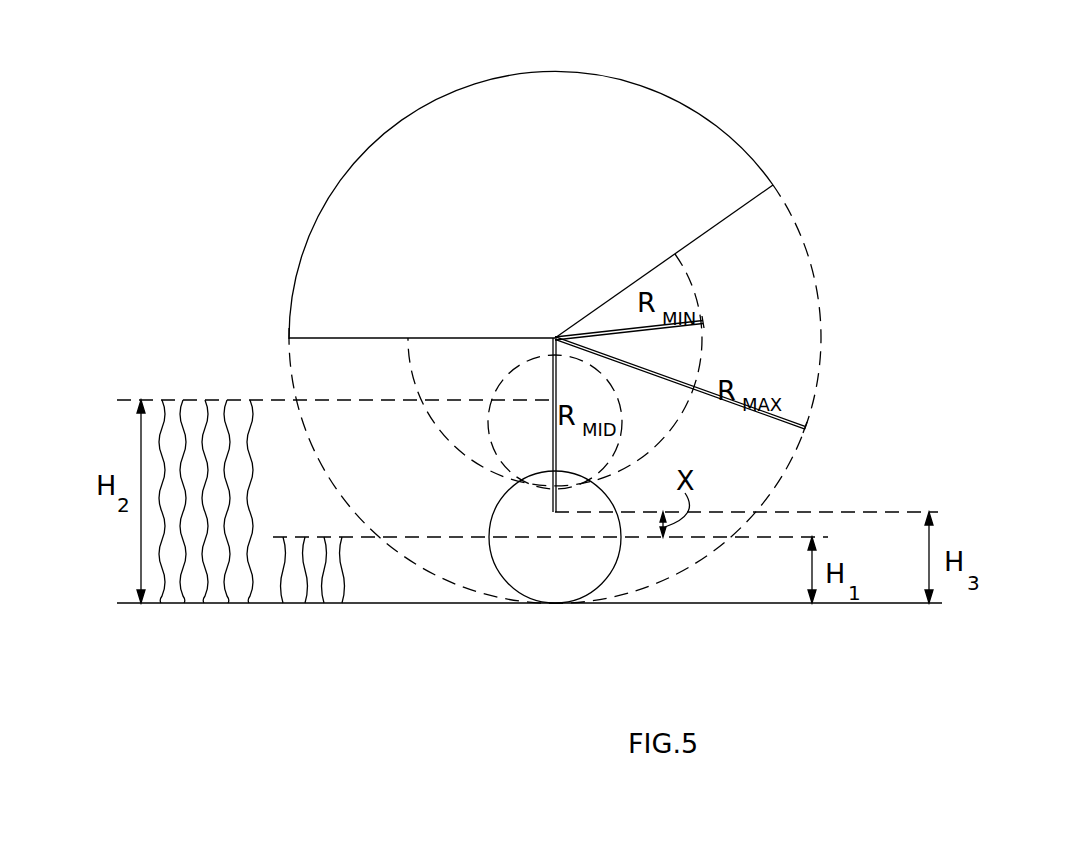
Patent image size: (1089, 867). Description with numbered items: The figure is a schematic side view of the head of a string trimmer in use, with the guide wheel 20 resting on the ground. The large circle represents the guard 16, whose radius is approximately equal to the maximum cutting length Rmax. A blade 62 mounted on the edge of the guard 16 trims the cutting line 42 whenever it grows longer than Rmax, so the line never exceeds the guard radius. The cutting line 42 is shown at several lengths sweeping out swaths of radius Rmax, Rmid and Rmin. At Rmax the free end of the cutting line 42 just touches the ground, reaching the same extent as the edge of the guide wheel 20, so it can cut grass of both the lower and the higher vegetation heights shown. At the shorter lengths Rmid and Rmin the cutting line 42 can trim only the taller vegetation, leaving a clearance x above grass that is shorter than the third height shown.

The guard 16 is at (368, 152).
The blade 62 is at (289, 337).
The cutting line 42 is at (758, 417).
The guide wheel 20 is at (520, 595).